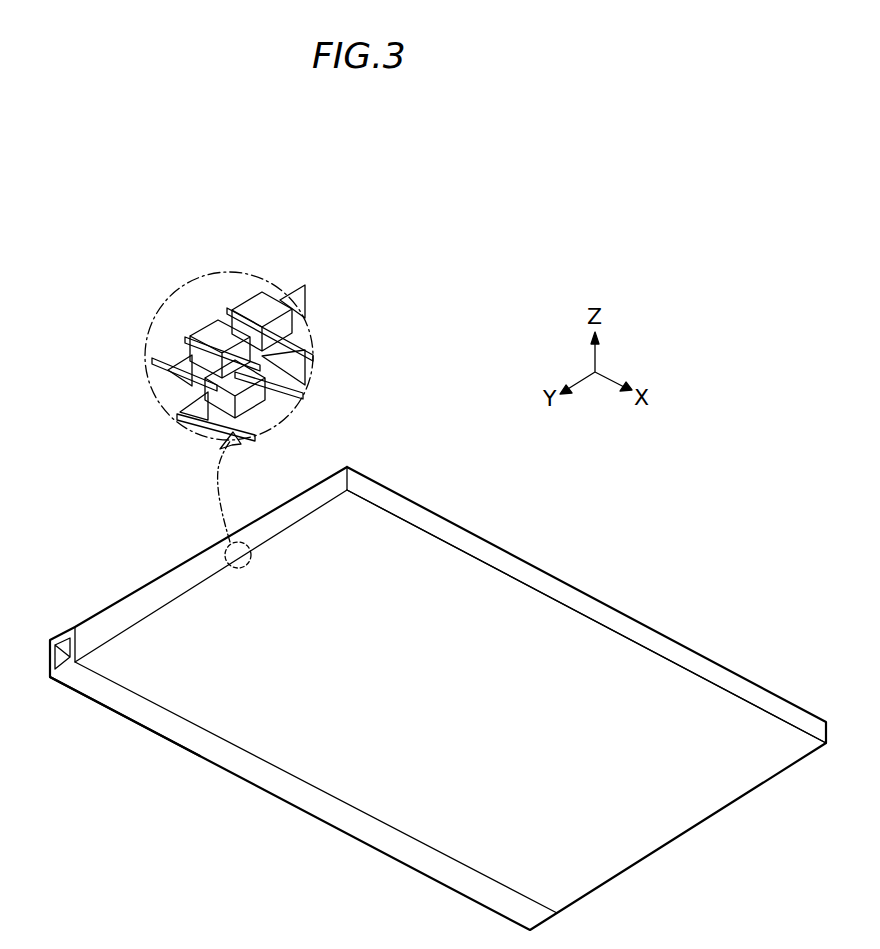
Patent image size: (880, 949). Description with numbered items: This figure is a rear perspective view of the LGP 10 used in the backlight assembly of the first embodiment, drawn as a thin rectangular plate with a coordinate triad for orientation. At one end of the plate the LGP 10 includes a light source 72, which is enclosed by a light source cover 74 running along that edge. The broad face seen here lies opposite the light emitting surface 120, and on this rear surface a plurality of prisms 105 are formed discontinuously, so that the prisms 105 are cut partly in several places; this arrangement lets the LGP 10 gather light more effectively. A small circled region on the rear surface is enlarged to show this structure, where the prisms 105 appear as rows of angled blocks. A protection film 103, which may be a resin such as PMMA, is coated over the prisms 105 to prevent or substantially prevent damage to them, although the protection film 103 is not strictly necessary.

The LGP 10 is at (732, 802).
The light source 72 is at (62, 651).
The light source cover 74 is at (74, 691).
The protection film 103 is at (212, 335).
The prisms 105 is at (172, 353).
The light emitting surface 120 is at (623, 685).